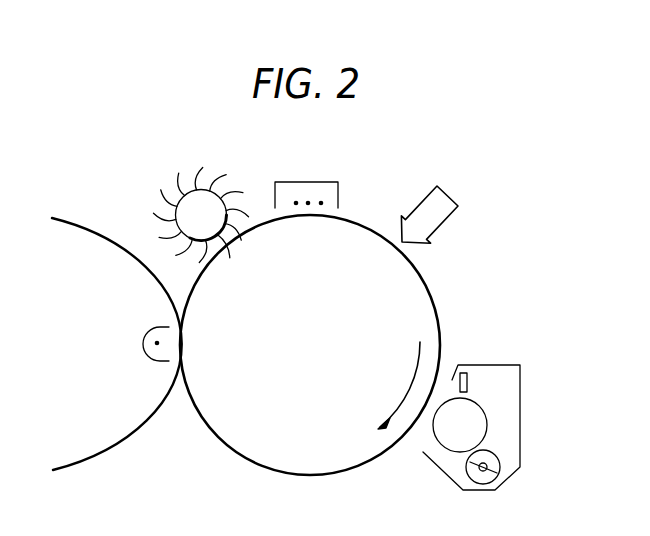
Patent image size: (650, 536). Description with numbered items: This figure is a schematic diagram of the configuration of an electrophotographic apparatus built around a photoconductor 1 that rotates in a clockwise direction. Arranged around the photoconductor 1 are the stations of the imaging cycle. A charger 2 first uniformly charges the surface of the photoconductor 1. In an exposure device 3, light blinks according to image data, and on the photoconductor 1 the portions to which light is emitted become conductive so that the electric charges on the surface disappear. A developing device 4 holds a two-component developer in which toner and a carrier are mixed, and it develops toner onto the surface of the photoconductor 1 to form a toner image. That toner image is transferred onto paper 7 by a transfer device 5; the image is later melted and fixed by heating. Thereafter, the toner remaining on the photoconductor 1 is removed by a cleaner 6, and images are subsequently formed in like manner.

The photoconductor 1 is at (435, 303).
The charger 2 is at (299, 182).
The exposure device 3 is at (445, 190).
The developing device 4 is at (522, 417).
The transfer device 5 is at (143, 344).
The cleaner 6 is at (163, 205).
The paper 7 is at (68, 223).